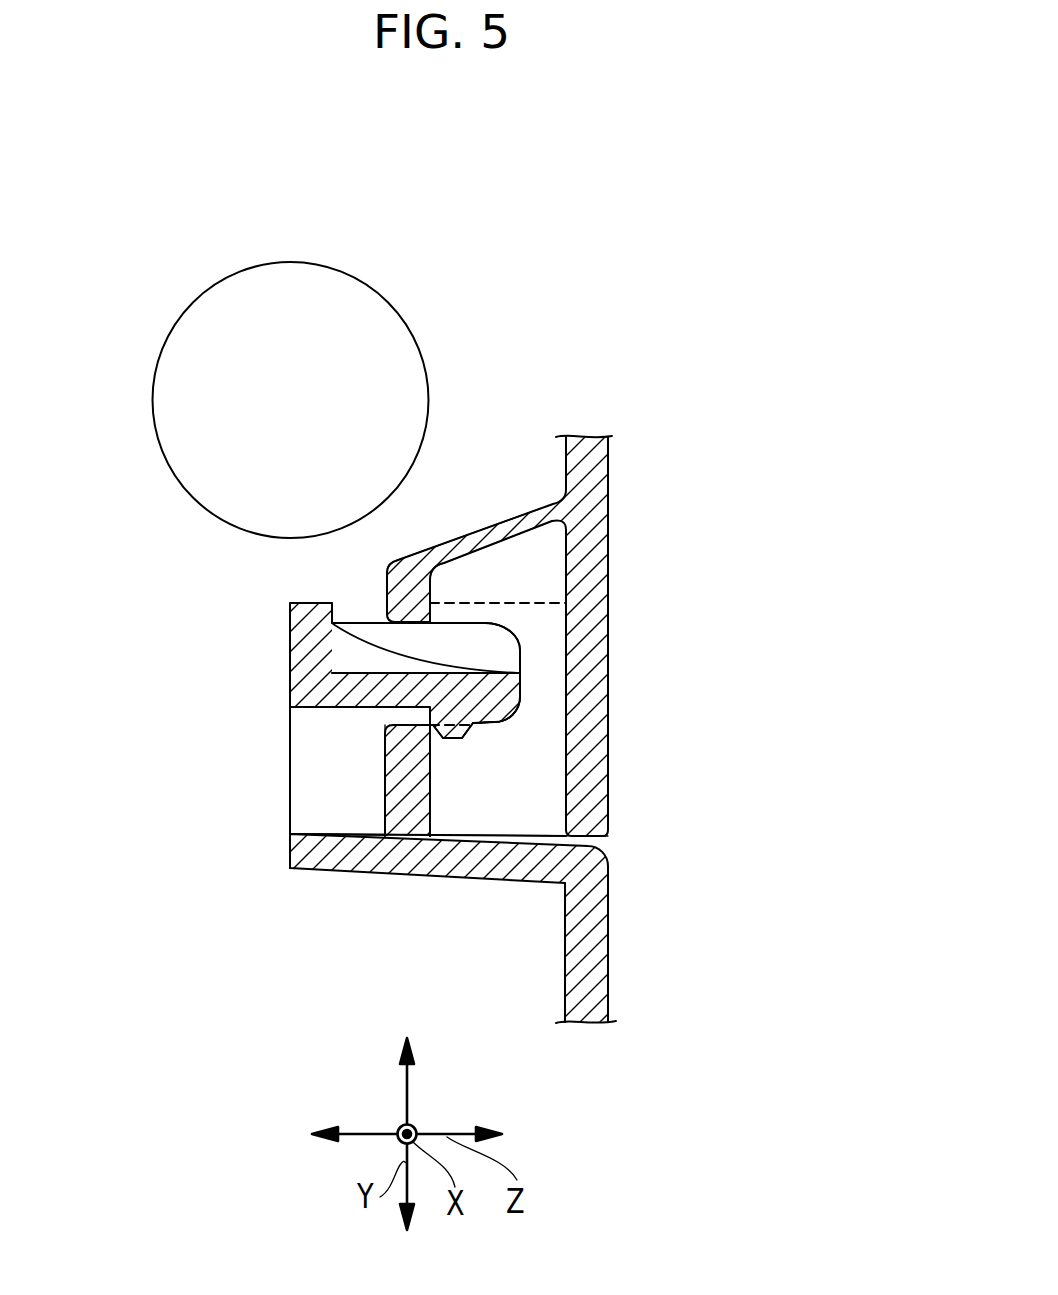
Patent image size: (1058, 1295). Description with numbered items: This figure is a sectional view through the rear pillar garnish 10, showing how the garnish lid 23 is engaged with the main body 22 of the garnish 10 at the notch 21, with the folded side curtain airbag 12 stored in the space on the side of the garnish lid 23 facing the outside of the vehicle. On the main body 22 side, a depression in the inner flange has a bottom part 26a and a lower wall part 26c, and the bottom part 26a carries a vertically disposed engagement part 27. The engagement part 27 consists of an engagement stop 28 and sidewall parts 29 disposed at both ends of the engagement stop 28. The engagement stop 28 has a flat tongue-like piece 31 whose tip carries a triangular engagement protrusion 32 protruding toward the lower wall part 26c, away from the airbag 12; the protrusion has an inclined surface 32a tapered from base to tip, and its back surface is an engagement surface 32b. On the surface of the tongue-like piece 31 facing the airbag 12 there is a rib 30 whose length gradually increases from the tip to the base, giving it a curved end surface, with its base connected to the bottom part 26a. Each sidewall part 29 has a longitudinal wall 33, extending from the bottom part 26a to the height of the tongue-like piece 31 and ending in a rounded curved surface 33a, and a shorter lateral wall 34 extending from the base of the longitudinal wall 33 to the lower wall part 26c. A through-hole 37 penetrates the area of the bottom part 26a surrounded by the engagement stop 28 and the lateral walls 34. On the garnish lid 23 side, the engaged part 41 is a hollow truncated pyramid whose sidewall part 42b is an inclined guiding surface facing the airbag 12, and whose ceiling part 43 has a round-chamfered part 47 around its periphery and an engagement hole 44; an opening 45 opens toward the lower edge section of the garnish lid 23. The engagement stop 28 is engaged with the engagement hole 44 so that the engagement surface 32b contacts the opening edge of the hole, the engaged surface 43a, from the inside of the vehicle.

The rear pillar garnish 10 is at (787, 1016).
The side curtain airbag 12 is at (159, 356).
The notch 21 is at (608, 834).
The main body 22 is at (642, 995).
The garnish lid 23 is at (637, 546).
The bottom part 26a is at (303, 655).
The lower wall part 26c is at (510, 867).
The engagement part 27 is at (539, 736).
The engagement stop 28 is at (609, 718).
The sidewall part 29 is at (513, 657).
The rib 30 is at (350, 658).
The tongue-like piece 31 is at (370, 697).
The engagement protrusion 32 is at (519, 707).
The inclined surface 32a is at (470, 725).
The engagement surface 32b is at (430, 713).
The longitudinal wall 33 is at (455, 637).
The curved surface 33a is at (518, 642).
The lateral wall 34 is at (352, 815).
The through-hole 37 is at (313, 835).
The engaged part 41 is at (360, 791).
The sidewall part 42b is at (495, 522).
The ceiling part 43 is at (408, 815).
The engaged surface 43a is at (438, 725).
The engagement hole 44 is at (410, 633).
The opening 45 is at (430, 815).
The chamfered part 47 is at (392, 565).